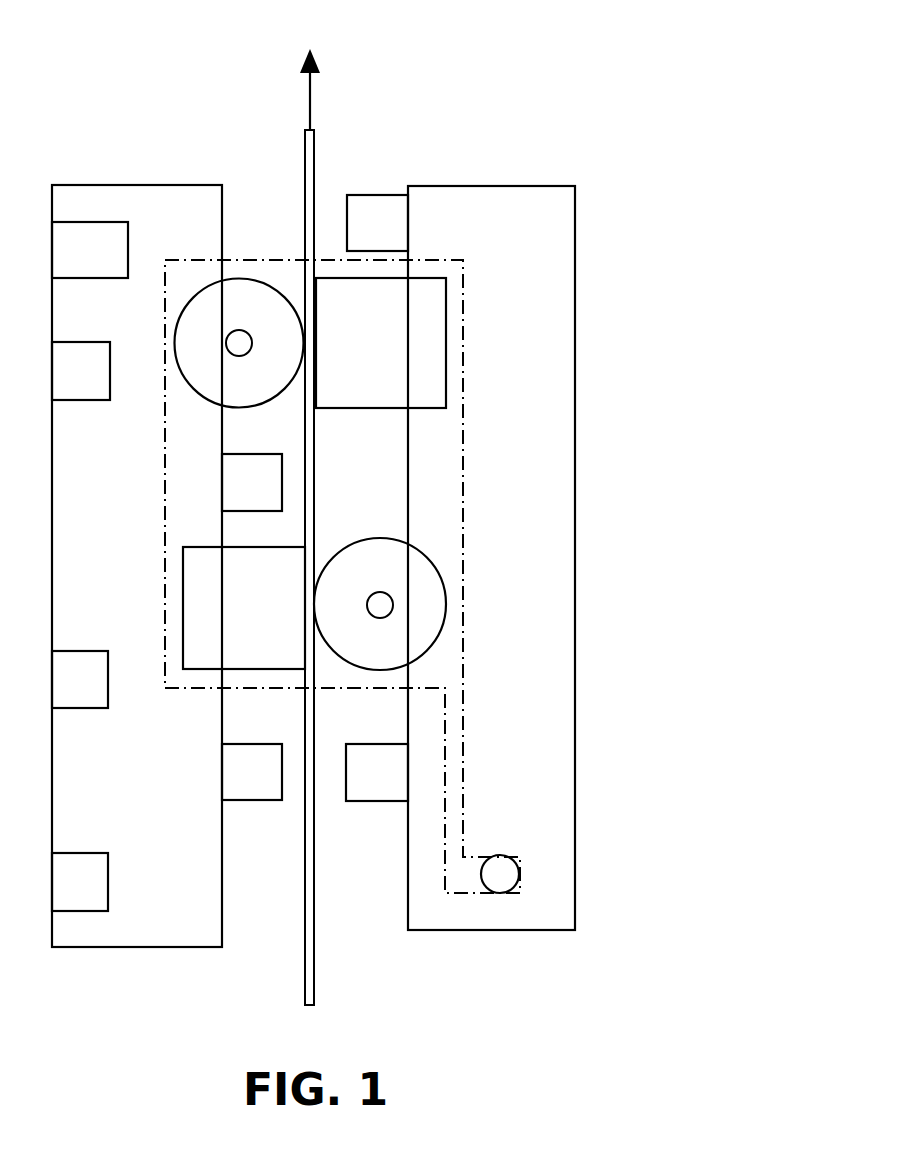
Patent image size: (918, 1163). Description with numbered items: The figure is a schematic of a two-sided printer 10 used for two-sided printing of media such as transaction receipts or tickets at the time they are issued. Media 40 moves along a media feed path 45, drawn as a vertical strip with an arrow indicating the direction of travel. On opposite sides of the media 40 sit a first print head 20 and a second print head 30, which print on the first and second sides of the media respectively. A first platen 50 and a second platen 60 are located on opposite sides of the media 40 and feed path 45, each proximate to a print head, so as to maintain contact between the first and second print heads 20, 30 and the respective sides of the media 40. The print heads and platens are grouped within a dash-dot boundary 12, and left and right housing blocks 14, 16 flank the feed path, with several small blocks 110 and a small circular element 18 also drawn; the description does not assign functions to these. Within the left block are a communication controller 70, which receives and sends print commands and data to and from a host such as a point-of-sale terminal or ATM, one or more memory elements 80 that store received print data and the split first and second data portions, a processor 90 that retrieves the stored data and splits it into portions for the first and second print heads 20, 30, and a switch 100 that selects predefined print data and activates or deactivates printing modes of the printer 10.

The two-sided printer 10 is at (468, 50).
The media path enclosure 12 is at (282, 252).
The left housing 14 is at (121, 784).
The right housing 16 is at (494, 786).
The sensor 18 is at (525, 873).
The first print head 20 is at (365, 356).
The second print head 30 is at (228, 621).
The media 40 is at (297, 147).
The media feed path 45 is at (313, 90).
The first platen 50 is at (223, 319).
The second platen 60 is at (364, 582).
The communication controller 70 is at (64, 894).
The memory element 80 is at (64, 691).
The processor 90 is at (65, 382).
The switch 100 is at (65, 261).
The guide 110 is at (354, 235).